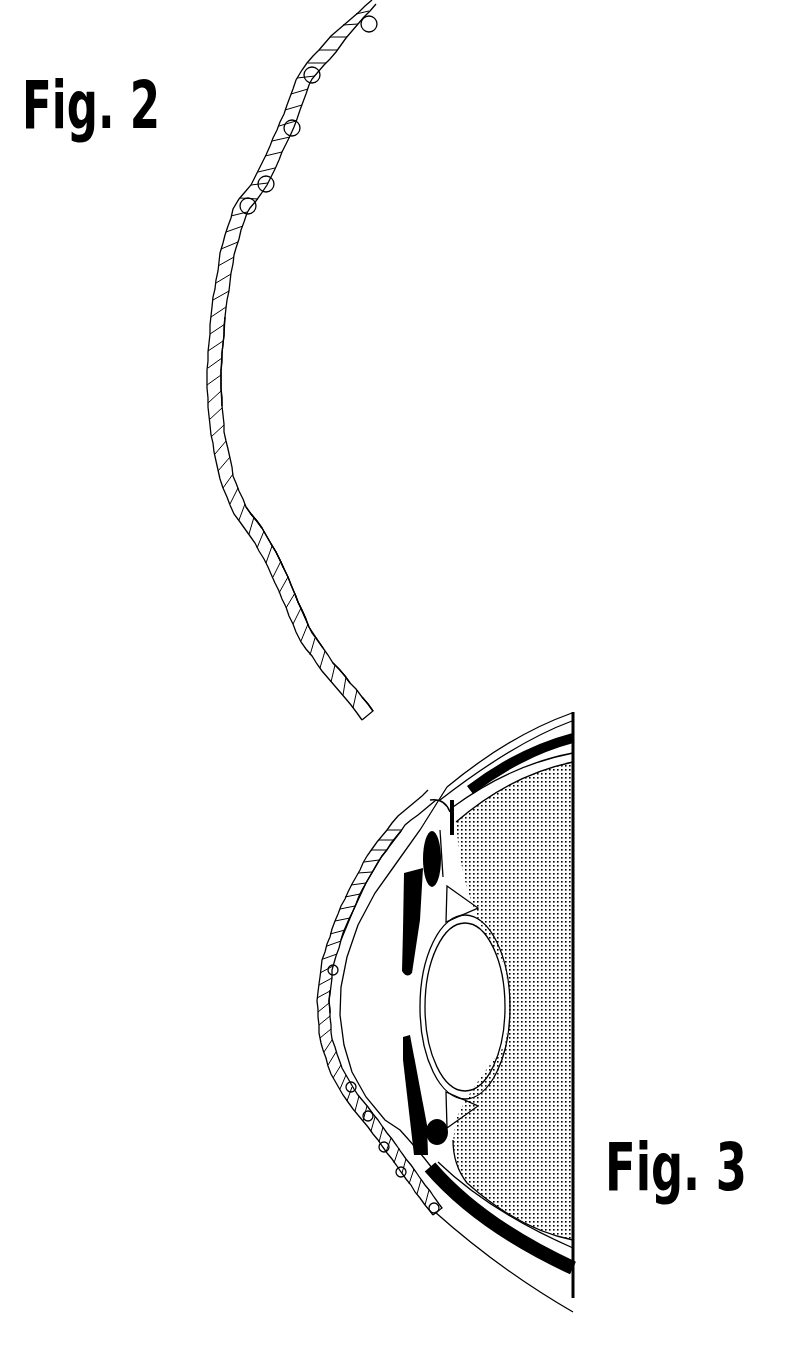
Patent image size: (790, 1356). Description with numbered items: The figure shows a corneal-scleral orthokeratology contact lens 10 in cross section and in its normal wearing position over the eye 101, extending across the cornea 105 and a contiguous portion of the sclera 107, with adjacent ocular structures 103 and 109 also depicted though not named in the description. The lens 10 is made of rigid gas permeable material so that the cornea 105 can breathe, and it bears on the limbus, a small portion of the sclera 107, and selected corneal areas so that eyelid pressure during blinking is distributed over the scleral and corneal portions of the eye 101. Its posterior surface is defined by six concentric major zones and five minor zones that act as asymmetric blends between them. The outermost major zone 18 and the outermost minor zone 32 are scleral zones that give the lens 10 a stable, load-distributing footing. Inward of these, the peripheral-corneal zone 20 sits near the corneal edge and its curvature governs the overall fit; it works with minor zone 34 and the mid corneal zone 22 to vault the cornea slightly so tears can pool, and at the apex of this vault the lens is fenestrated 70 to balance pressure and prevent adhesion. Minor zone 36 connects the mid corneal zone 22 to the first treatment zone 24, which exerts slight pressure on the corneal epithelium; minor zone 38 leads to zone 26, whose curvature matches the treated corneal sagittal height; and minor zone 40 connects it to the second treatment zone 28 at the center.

In FIG. 2, the corneal-scleral orthokeratology contact lens 10 is at (205, 373).
In FIG. 3, the corneal-scleral orthokeratology contact lens 10 is at (320, 938).
In FIG. 2, the outermost major zone 18 is at (371, 707).
In FIG. 3, the outermost major zone 18 is at (431, 1211).
In FIG. 2, the peripheral-corneal zone 20 is at (346, 670).
In FIG. 3, the peripheral-corneal zone 20 is at (398, 1174).
In FIG. 2, the mid corneal zone 22 is at (304, 611).
In FIG. 3, the mid corneal zone 22 is at (381, 1149).
In FIG. 2, the first treatment zone 24 is at (282, 558).
In FIG. 3, the first treatment zone 24 is at (365, 1118).
In FIG. 2, the treatment zone sagittal adjustment curve 26 is at (260, 516).
In FIG. 3, the treatment zone sagittal adjustment curve 26 is at (348, 1085).
In FIG. 2, the second treatment zone 28 is at (226, 352).
In FIG. 3, the second treatment zone 28 is at (328, 964).
In FIG. 2, the outermost minor zone 32 is at (376, 30).
In FIG. 2, the minor zone 34 is at (319, 78).
In FIG. 2, the minor zone 36 is at (299, 131).
In FIG. 2, the minor zone 38 is at (273, 188).
In FIG. 2, the minor zone 40 is at (253, 210).
In FIG. 2, the fenestration 70 is at (299, 652).
In FIG. 3, the fenestration 70 is at (376, 831).
In FIG. 3, the eye 101 is at (581, 1020).
In FIG. 3, the posterior lens surface 103 is at (333, 997).
In FIG. 3, the cornea 105 is at (347, 1025).
In FIG. 3, the sclera 107 is at (447, 787).
In FIG. 3, the conjunctiva 109 is at (540, 1290).